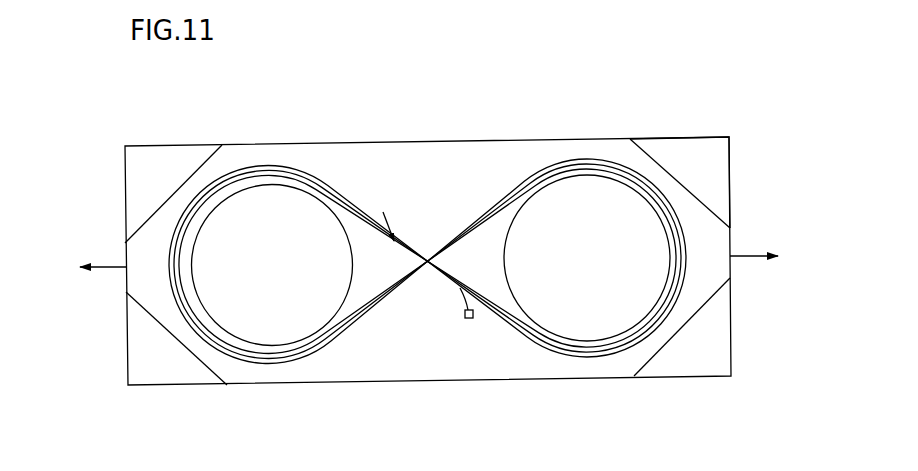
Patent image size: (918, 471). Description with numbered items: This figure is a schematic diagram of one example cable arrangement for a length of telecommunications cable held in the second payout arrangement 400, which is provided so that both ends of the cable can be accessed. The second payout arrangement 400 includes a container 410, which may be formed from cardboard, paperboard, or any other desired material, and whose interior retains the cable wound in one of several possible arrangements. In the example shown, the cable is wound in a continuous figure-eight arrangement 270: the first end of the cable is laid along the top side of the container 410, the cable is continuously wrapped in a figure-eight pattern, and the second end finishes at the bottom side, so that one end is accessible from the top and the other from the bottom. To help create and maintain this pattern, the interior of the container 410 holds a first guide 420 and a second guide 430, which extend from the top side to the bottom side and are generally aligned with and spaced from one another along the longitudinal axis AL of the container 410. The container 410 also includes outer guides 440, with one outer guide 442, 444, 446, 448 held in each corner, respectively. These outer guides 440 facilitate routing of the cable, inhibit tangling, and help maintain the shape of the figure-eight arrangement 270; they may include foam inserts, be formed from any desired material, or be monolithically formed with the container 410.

The second payout arrangement 400 is at (80, 245).
The container 410 is at (398, 383).
The first guide 420 is at (292, 262).
The second guide 430 is at (609, 257).
The outer guides 440 is at (673, 152).
The outer guide 442 is at (153, 160).
The outer guide 444 is at (697, 152).
The outer guide 446 is at (708, 345).
The outer guide 448 is at (150, 360).
The continuous FIG. 8 arrangement 270 is at (398, 206).
The longitudinal axis AL is at (759, 240).